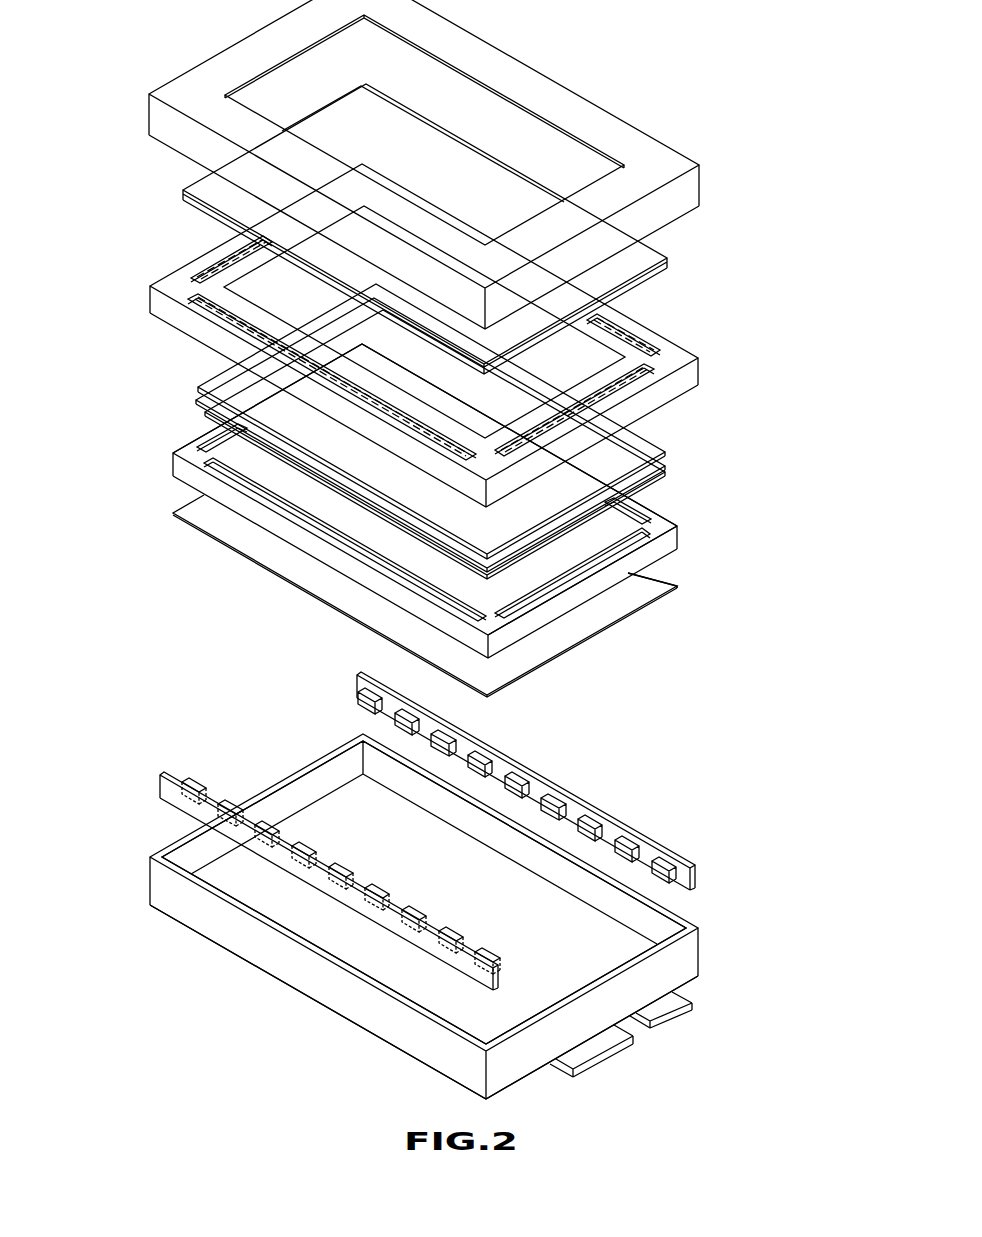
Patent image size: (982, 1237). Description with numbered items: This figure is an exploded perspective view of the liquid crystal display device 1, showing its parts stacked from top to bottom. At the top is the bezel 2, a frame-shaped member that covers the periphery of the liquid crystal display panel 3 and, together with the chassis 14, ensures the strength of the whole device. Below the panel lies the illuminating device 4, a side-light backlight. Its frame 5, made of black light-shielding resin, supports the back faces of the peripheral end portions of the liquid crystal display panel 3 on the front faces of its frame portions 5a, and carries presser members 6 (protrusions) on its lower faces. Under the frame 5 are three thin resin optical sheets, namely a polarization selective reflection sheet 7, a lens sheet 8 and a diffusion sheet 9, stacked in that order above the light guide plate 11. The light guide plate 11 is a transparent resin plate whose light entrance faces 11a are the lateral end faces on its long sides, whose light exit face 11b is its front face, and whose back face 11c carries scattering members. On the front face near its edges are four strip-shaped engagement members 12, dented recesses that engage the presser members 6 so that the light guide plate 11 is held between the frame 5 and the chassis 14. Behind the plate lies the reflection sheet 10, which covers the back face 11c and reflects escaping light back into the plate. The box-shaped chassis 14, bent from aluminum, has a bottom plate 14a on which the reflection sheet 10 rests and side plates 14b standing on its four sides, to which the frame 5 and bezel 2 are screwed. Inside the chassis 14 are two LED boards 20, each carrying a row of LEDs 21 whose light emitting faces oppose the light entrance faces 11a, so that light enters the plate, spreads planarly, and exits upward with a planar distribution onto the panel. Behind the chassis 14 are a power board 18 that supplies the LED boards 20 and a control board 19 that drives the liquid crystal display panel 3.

The liquid crystal display device 1 is at (782, 100).
The bezel 2 is at (173, 87).
The liquid crystal display panel 3 is at (208, 181).
The illuminating device 4 is at (757, 330).
The frame 5 is at (150, 280).
The frame portions 5a is at (222, 250).
The presser members 6 is at (215, 270).
The polarization selective reflection sheet 7 is at (202, 385).
The lens sheet 8 is at (196, 398).
The diffusion sheet 9 is at (205, 410).
The reflection sheet 10 is at (208, 530).
The light guide plate 11 is at (180, 482).
The light entrance faces 11a is at (345, 562).
The light exit face 11b is at (565, 556).
The back face 11c is at (648, 575).
The engagement members 12 is at (200, 440).
The chassis 14 is at (300, 1000).
The bottom plate 14a is at (465, 1002).
The side plates 14b is at (305, 780).
The power board 18 is at (680, 1023).
The control board 19 is at (620, 1060).
The LED boards 20 is at (212, 796).
The LEDs 21 is at (255, 830).